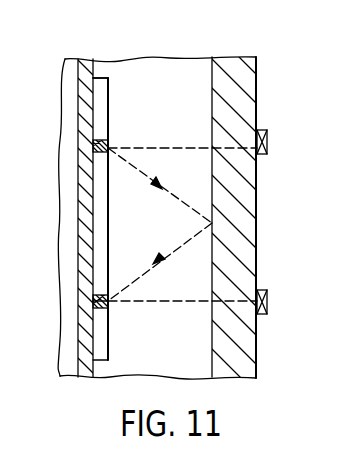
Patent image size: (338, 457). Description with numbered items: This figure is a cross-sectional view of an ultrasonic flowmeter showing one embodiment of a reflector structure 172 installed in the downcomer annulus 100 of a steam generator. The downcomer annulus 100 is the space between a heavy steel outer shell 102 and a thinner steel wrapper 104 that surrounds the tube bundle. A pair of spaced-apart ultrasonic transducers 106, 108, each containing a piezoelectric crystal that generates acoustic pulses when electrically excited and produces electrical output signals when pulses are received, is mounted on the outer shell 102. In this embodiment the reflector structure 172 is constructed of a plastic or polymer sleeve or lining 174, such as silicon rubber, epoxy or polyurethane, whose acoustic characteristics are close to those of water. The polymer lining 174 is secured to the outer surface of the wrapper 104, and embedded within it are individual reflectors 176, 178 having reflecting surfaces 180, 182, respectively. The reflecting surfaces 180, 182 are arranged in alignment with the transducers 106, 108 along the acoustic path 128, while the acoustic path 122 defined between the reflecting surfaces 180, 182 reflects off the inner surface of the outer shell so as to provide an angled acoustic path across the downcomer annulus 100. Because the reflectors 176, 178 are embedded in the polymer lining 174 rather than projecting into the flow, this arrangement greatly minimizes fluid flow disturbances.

The downcomer annulus 100 is at (140, 369).
The outer shell 102 is at (236, 93).
The wrapper 104 is at (85, 218).
The ultrasonic transducer 106 is at (261, 131).
The ultrasonic transducer 108 is at (267, 301).
The acoustic path 122 is at (168, 194).
The acoustic path 128 is at (143, 302).
The reflector structure 172 is at (105, 101).
The polymer lining 174 is at (99, 78).
The reflector 176 is at (102, 141).
The reflector 178 is at (100, 306).
The reflecting surface 180 is at (113, 285).
The reflecting surface 182 is at (104, 153).